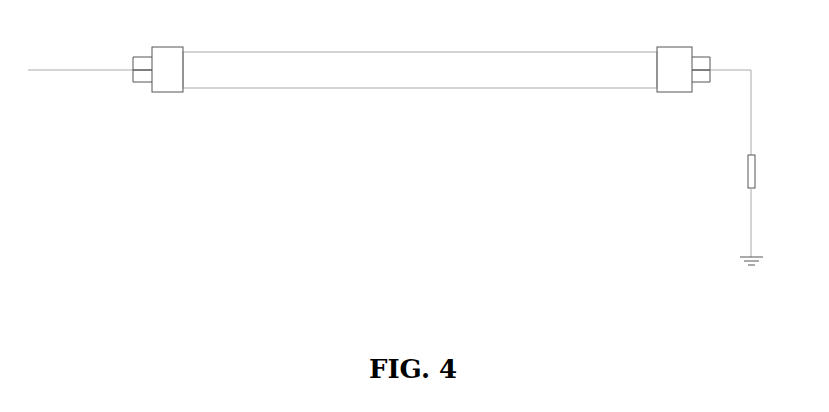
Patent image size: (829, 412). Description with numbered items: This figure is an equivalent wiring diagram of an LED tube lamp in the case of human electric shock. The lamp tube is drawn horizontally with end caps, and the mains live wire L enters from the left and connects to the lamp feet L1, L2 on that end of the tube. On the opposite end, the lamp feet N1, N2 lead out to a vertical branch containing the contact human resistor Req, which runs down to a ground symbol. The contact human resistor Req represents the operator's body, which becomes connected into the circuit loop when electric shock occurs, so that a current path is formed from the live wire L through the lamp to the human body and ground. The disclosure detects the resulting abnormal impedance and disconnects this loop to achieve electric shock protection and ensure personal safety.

The live wire L is at (80, 88).
The lamp foot L1 is at (136, 53).
The lamp foot L2 is at (136, 87).
The lamp foot N1 is at (705, 53).
The lamp foot N2 is at (705, 87).
The contact human resistor Req is at (771, 171).